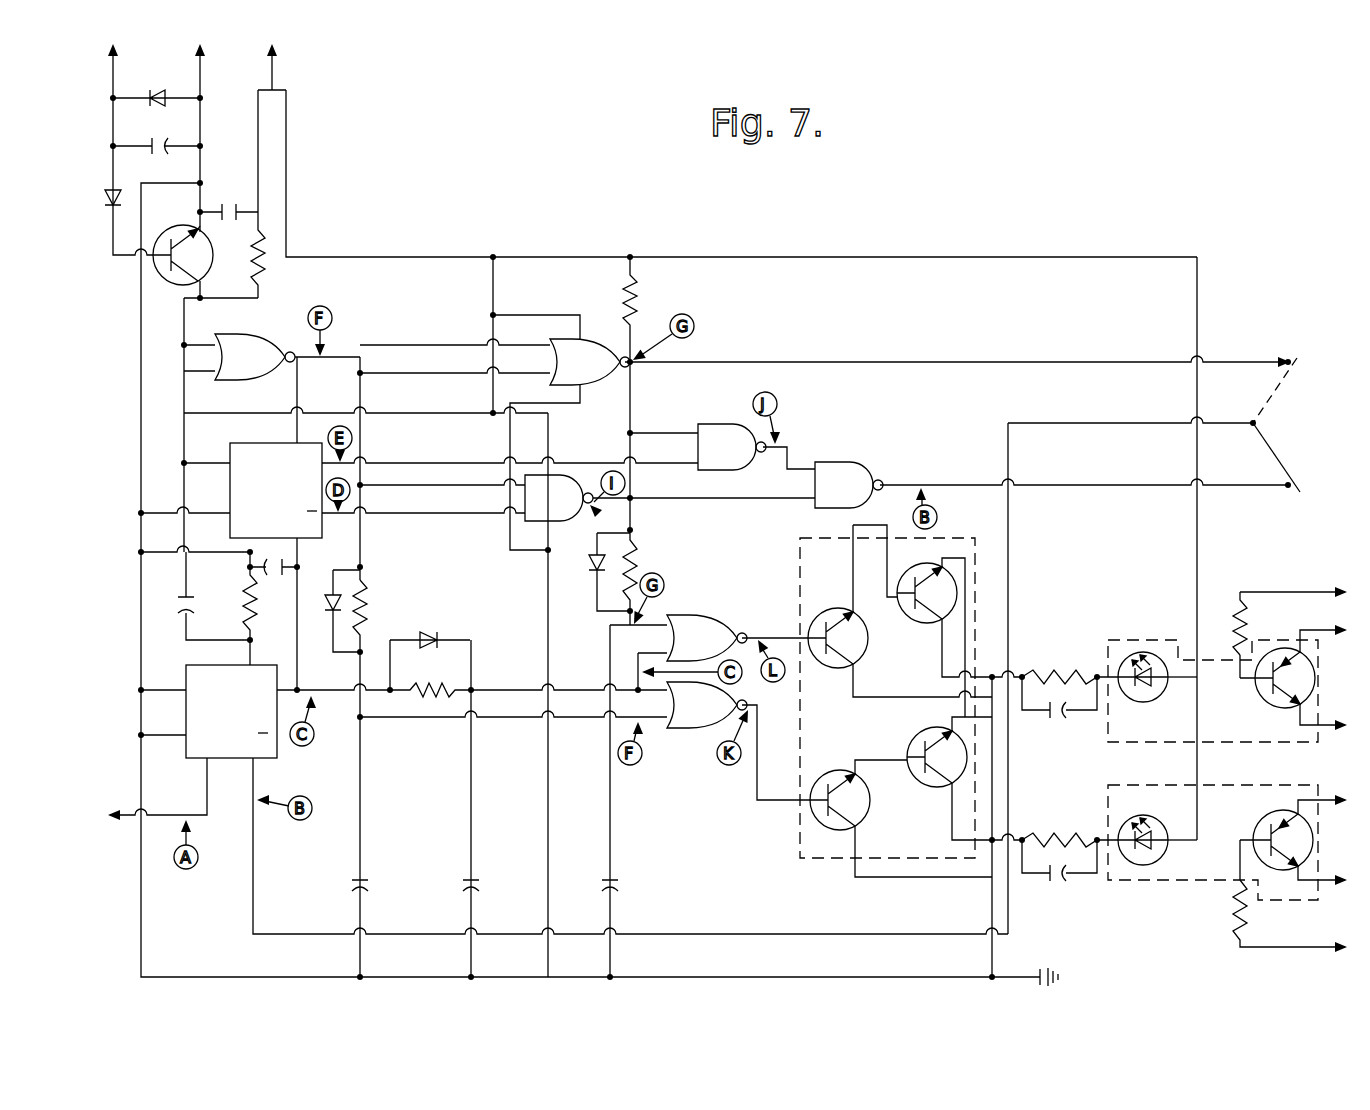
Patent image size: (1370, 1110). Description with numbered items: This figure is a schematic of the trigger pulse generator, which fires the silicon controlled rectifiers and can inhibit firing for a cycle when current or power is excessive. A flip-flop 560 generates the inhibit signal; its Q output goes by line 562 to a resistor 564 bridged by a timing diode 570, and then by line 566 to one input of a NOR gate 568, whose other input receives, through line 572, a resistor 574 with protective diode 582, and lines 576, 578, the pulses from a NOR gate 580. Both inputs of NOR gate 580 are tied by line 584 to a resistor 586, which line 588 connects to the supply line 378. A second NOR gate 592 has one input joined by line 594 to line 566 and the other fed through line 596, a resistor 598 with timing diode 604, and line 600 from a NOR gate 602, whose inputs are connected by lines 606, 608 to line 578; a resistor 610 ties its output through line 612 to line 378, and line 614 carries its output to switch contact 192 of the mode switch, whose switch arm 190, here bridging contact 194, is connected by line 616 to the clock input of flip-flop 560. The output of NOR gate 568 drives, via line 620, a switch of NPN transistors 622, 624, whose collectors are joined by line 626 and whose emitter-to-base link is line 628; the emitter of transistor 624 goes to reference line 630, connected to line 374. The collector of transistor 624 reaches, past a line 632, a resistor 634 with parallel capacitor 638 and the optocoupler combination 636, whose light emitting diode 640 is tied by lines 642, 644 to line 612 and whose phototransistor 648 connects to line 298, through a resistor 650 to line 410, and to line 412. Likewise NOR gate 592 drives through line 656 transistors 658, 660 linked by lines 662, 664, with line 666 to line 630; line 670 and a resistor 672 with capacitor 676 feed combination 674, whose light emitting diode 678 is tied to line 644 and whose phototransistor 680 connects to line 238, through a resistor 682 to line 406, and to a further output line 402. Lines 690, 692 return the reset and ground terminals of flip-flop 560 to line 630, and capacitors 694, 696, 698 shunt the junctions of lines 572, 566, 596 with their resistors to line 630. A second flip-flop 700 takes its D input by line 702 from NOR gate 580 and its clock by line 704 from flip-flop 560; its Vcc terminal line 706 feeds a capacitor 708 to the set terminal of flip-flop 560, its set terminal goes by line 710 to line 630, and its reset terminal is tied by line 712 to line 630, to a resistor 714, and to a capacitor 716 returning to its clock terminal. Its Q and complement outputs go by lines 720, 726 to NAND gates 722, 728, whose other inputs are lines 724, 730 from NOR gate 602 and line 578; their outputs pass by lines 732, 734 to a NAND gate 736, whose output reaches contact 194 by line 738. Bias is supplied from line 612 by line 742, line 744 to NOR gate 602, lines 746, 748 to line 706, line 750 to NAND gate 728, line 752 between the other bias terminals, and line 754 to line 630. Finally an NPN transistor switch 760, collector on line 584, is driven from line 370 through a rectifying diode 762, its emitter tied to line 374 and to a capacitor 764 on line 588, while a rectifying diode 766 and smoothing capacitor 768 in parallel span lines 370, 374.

The switch arm 190 is at (1292, 452).
The switch contact 192 is at (1288, 356).
The switch contact 194 is at (1288, 488).
The line 238 is at (1322, 625).
The line 298 is at (1322, 888).
The line 370 is at (113, 70).
The line 374 is at (205, 70).
The line 378 is at (280, 71).
The output terminal 402 is at (1322, 716).
The line 406 is at (1300, 590).
The line 410 is at (1280, 952).
The line 412 is at (1332, 763).
The flip-flop 560 is at (282, 752).
The line 562 is at (335, 698).
The resistor 564 is at (455, 690).
The line 566 is at (512, 690).
The NOR gate 568 is at (696, 730).
The timing diode 570 is at (432, 632).
The line 572 is at (512, 719).
The resistor 574 is at (368, 600).
The line 576 is at (362, 560).
The line 578 is at (345, 357).
The NOR gate 580 is at (248, 380).
The protective diode 582 is at (332, 625).
The line 584 is at (186, 316).
The resistor 586 is at (262, 262).
The line 588 is at (258, 138).
The NOR gate 592 is at (710, 618).
The line 594 is at (660, 640).
The line 596 is at (662, 615).
The resistor 598 is at (638, 555).
The line 600 is at (645, 487).
The NOR gate 602 is at (592, 388).
The timing diode 604 is at (590, 570).
The line 606 is at (440, 345).
The line 608 is at (403, 380).
The resistor 610 is at (640, 282).
The line 612 is at (536, 255).
The line 614 is at (888, 362).
The line 616 is at (1108, 423).
The line 620 is at (762, 810).
The first NPN transistor 622 is at (860, 826).
The second NPN transistor 624 is at (938, 787).
The line 626 is at (990, 905).
The line 628 is at (870, 758).
The reference line 630 is at (141, 331).
The node 632 is at (1004, 838).
The resistor 634 is at (1058, 832).
The light emitting diode and phototransistor combination 636 is at (1180, 892).
The capacitor 638 is at (1058, 884).
The light emitting diode 640 is at (1180, 810).
The line 642 is at (1197, 762).
The line 644 is at (1197, 530).
The phototransistor 648 is at (1262, 822).
The resistor 650 is at (1236, 935).
The line 656 is at (777, 638).
The first NPN transistor 658 is at (862, 650).
The second NPN transistor 660 is at (926, 624).
The line 662 is at (852, 585).
The line 664 is at (888, 698).
The line 666 is at (965, 604).
The line 670 is at (1002, 676).
The resistor 672 is at (1057, 668).
The light emitting diode and phototransistor combination 674 is at (1130, 635).
The capacitor 676 is at (1052, 722).
The light emitting diode 678 is at (1138, 702).
The phototransistor 680 is at (1266, 704).
The resistor 682 is at (1240, 602).
The line 690 is at (168, 743).
The line 692 is at (165, 684).
The capacitor 694 is at (355, 878).
The capacitor 696 is at (466, 878).
The capacitor 698 is at (614, 878).
The second flip-flop 700 is at (247, 443).
The line 702 is at (297, 390).
The line 704 is at (282, 598).
The line 706 is at (210, 467).
The capacitor 708 is at (186, 616).
The line 710 is at (210, 520).
The line 712 is at (214, 570).
The resistor 714 is at (258, 612).
The capacitor 716 is at (286, 560).
The line 720 is at (460, 463).
The NAND gate 722 is at (728, 424).
The line 724 is at (660, 433).
The line 726 is at (458, 500).
The NAND gate 728 is at (590, 510).
The line 730 is at (458, 476).
The line 732 is at (788, 447).
The line 734 is at (745, 501).
The NAND gate 736 is at (858, 462).
The line 738 is at (968, 485).
The line 742 is at (493, 284).
The line 744 is at (538, 315).
The line 746 is at (490, 360).
The line 748 is at (428, 424).
The line 750 is at (548, 445).
The line 752 is at (510, 541).
The line 754 is at (548, 600).
The NPN transistor switch 760 is at (180, 226).
The rectifying diode 762 is at (108, 201).
The capacitor 764 is at (224, 206).
The rectifying diode 766 is at (158, 92).
The smoothing capacitor 768 is at (150, 144).